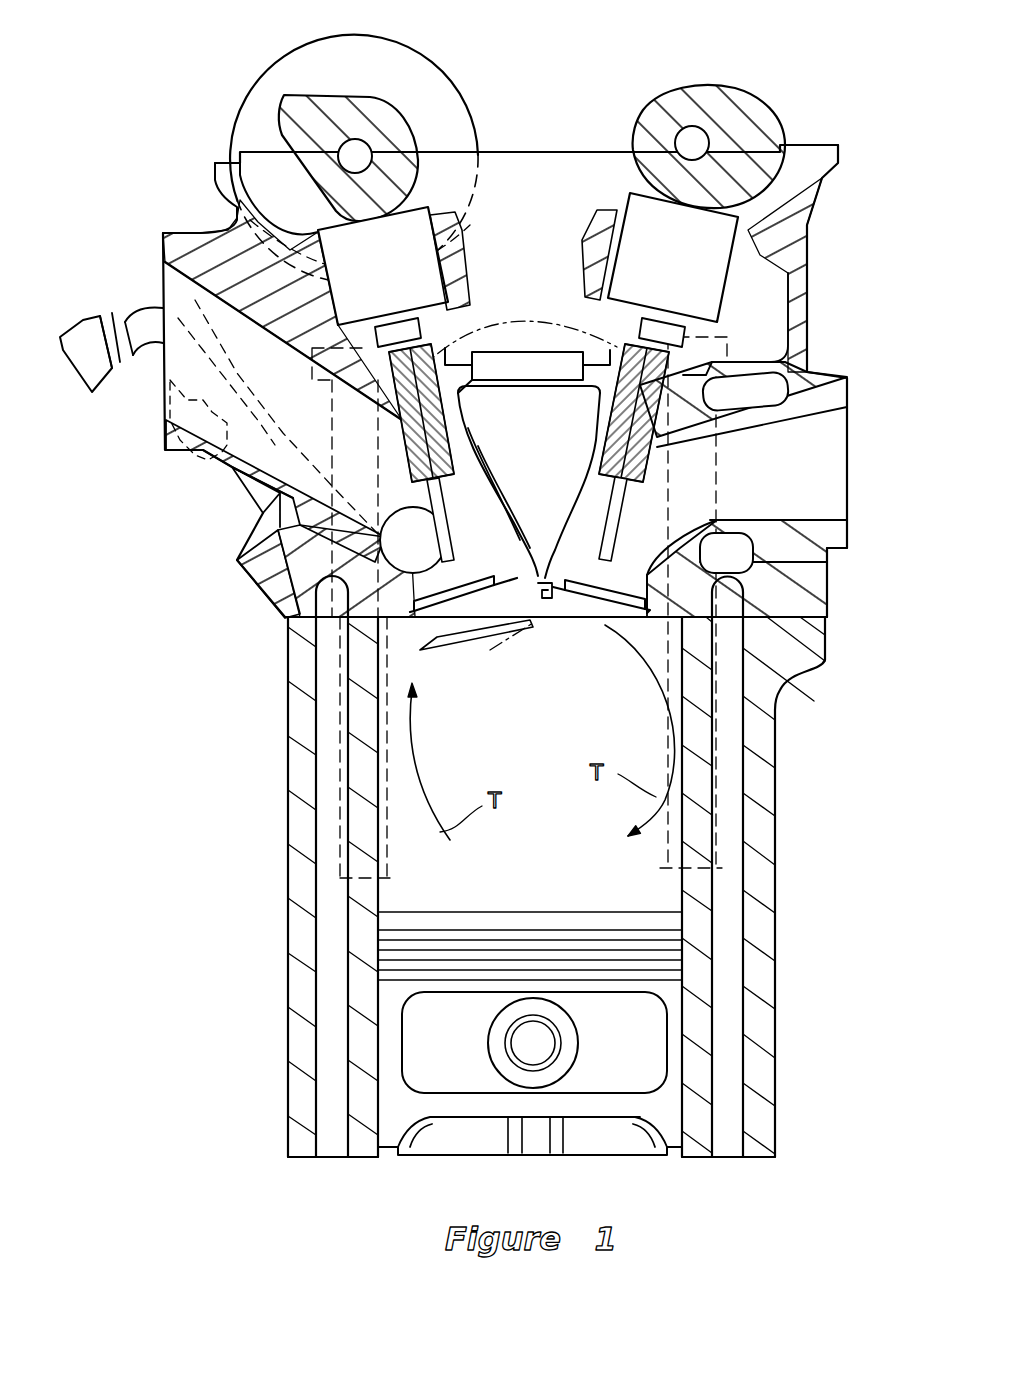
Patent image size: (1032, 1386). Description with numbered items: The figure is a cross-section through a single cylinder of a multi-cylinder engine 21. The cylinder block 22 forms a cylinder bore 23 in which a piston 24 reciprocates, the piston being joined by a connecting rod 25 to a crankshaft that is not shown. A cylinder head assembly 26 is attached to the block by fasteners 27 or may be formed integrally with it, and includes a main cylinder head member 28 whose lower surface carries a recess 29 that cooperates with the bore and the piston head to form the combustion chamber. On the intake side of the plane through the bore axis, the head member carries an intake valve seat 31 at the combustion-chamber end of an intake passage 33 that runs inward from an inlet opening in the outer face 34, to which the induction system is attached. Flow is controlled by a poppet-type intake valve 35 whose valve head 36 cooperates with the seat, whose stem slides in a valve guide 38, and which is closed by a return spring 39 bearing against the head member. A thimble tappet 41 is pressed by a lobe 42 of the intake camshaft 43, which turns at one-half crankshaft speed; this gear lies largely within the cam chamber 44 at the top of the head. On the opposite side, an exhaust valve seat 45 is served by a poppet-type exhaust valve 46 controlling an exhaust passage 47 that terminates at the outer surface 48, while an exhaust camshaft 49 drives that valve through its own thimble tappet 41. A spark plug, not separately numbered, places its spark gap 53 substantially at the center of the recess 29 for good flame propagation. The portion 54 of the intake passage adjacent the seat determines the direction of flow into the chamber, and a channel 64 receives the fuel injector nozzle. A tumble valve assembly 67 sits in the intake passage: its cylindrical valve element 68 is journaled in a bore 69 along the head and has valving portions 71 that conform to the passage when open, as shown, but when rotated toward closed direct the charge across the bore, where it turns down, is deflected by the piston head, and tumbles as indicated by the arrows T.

The engine 21 is at (805, 800).
The cylinder block 22 is at (777, 745).
The cylinder bore 23 is at (677, 900).
The piston 24 is at (650, 1028).
The connecting rod 25 is at (560, 1133).
The cylinder head assembly 26 is at (822, 312).
The fasteners 27 is at (745, 662).
The cylinder head member 28 is at (832, 592).
The cylinder head recess 29 is at (583, 607).
The intake valve seat 31 is at (393, 620).
The intake passage 33 is at (225, 215).
The outer face 34 is at (163, 240).
The intake valve 35 is at (465, 414).
The valve head 36 is at (467, 607).
The valve guide 38 is at (492, 358).
The return spring 39 is at (478, 314).
The thimble tappet 41 is at (632, 243).
The cam lobe 42 is at (405, 115).
The intake camshaft 43 is at (435, 60).
The cam chamber 44 is at (552, 170).
The exhaust valve seat 45 is at (553, 572).
The exhaust valve 46 is at (616, 554).
The exhaust passage 47 is at (820, 485).
The outer surface 48 is at (848, 388).
The exhaust camshaft 49 is at (752, 90).
The spark gap 53 is at (242, 498).
The intake passage portion adjacent valve seat 54 is at (505, 515).
The channel 64 is at (283, 610).
The tumble valve assembly 67 is at (478, 472).
The valve element 68 is at (427, 502).
The bore 69 is at (290, 622).
The valving portion 71 is at (540, 458).